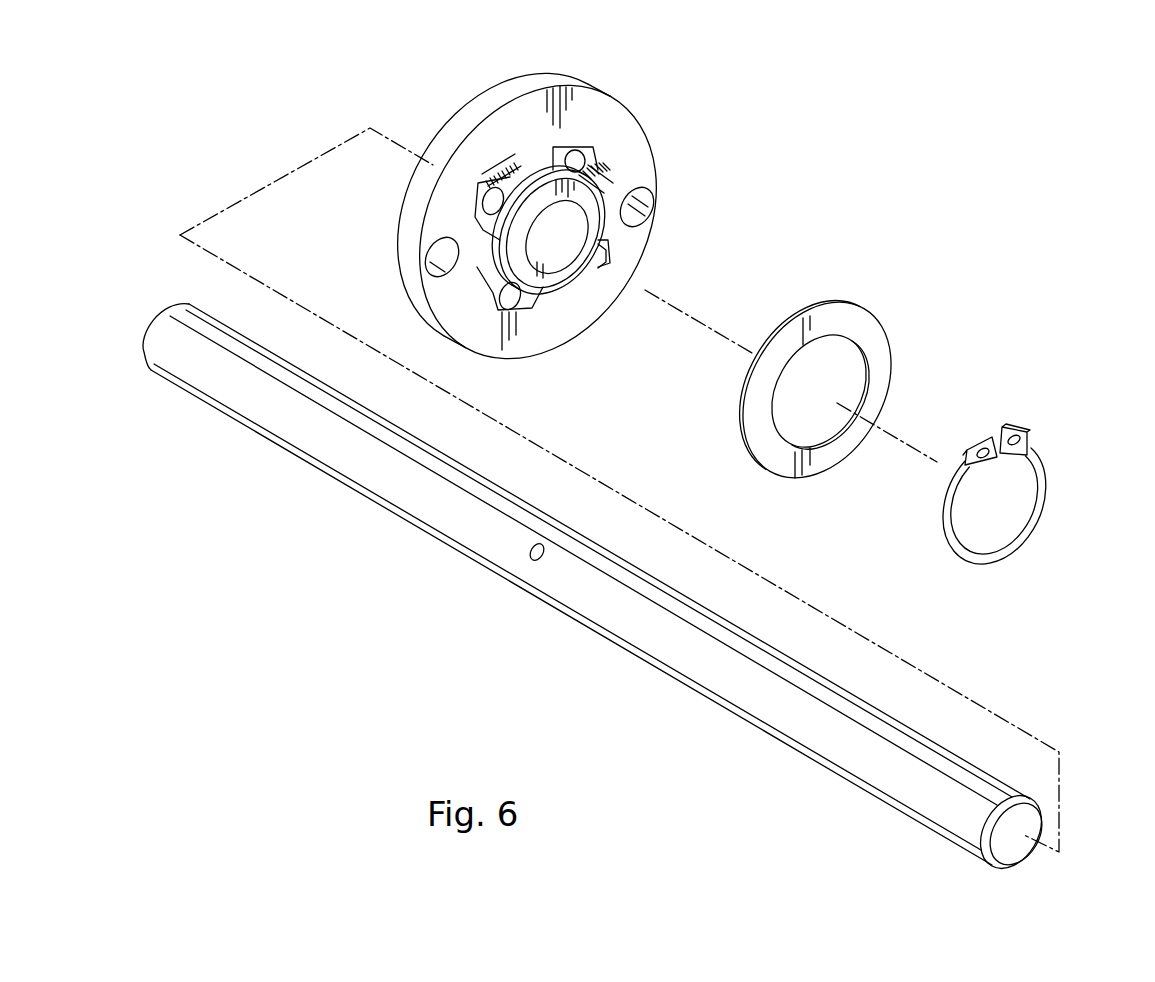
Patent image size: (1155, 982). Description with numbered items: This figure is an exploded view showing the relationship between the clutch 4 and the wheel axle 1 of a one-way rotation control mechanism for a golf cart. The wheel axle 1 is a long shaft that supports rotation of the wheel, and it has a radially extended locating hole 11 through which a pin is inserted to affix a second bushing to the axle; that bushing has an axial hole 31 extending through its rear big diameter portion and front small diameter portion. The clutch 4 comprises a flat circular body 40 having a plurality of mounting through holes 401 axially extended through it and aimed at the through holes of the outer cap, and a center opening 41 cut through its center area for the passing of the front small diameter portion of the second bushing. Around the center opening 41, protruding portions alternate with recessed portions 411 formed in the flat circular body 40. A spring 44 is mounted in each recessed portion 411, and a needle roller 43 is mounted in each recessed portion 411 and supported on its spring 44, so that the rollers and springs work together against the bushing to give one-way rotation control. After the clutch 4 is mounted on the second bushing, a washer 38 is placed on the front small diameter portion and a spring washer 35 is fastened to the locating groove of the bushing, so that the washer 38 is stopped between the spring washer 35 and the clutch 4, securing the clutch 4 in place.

The wheel axle 1 is at (598, 592).
The radially extended locating hole 11 is at (530, 560).
The clutch 4 is at (433, 137).
The flat circular body 40 is at (658, 185).
The mounting through holes 401 is at (437, 258).
The center opening 41 is at (513, 188).
The recessed portions 411 is at (558, 158).
The needle rollers 43 is at (570, 158).
The springs 44 is at (497, 165).
The axial hole 31 is at (550, 260).
The washer 38 is at (888, 330).
The spring washer 35 is at (1045, 458).